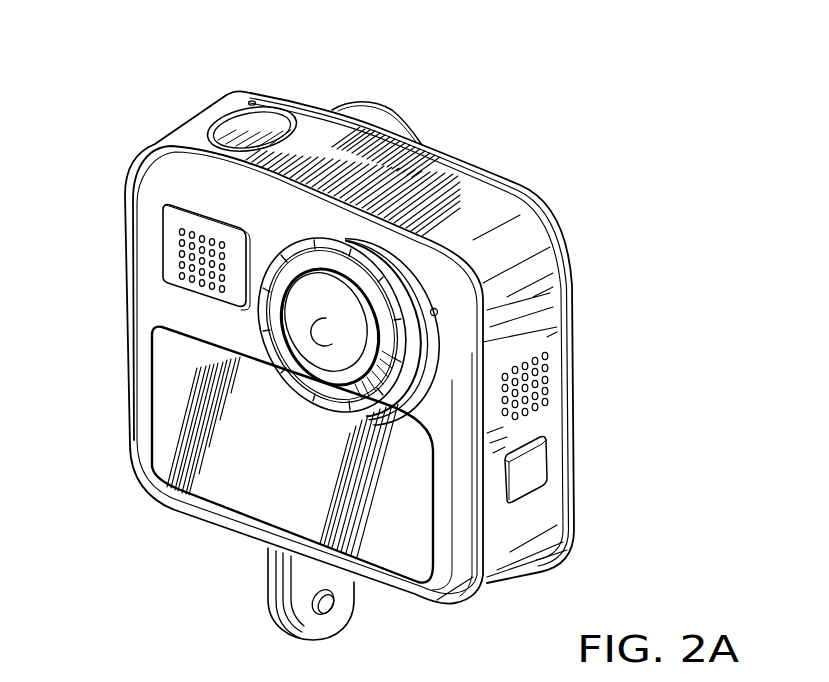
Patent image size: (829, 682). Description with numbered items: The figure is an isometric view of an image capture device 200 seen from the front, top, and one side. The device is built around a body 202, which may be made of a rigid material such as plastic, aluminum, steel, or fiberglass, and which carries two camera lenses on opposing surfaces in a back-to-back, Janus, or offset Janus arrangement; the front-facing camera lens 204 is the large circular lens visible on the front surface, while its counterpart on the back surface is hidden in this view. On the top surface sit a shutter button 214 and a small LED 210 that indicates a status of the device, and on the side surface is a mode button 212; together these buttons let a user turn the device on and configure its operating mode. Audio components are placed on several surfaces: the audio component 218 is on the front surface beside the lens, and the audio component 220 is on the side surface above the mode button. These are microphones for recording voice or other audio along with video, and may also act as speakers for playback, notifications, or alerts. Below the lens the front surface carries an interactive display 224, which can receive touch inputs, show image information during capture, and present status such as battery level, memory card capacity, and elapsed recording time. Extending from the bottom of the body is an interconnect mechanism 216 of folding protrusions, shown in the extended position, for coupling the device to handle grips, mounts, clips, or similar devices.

The image capture device 200 is at (616, 161).
The body 202 is at (125, 320).
The camera lens 204 is at (307, 350).
The LED 210 is at (253, 99).
The mode button 212 is at (537, 463).
The shutter button 214 is at (263, 130).
The interconnect mechanism 216 is at (300, 582).
The audio component 218 is at (180, 262).
The audio component 220 is at (547, 377).
The interactive display 224 is at (420, 553).